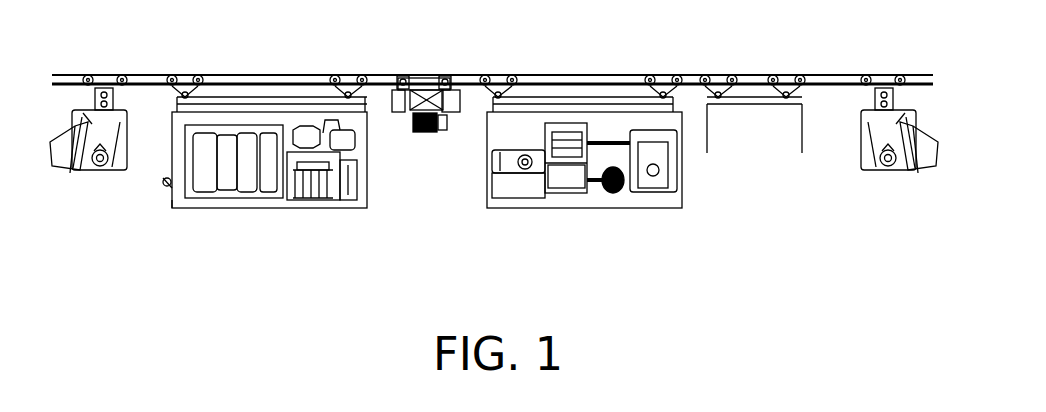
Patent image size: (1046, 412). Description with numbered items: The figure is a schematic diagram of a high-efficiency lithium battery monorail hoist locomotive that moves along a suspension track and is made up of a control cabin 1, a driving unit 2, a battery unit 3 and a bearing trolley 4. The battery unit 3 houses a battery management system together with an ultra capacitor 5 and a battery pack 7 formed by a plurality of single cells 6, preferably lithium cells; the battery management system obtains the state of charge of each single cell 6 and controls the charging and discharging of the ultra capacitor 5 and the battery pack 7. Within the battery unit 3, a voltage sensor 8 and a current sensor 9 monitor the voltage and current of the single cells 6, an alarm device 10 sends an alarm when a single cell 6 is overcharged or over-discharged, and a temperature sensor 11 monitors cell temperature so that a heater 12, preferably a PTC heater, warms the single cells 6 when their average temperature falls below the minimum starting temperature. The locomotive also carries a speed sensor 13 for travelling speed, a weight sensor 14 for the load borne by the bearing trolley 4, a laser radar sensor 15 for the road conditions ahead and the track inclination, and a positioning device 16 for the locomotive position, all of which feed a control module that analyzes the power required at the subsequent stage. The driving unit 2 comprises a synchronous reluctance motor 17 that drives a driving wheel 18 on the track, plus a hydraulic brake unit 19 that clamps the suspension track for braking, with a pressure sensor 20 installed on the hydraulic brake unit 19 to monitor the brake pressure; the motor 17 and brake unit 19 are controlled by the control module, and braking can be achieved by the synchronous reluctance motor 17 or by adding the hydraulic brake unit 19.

The control cabin 1 is at (100, 132).
The driving unit 2 is at (417, 77).
The battery unit 3 is at (240, 122).
The bearing trolley 4 is at (757, 97).
The ultra capacitor 5 is at (336, 200).
The single cell 6 is at (228, 180).
The battery pack 7 is at (157, 74).
The voltage sensor 8 is at (236, 190).
The current sensor 9 is at (250, 193).
The alarm device 10 is at (895, 172).
The temperature sensor 11 is at (252, 195).
The heater 12 is at (173, 207).
The speed sensor 13 is at (903, 110).
The weight sensor 14 is at (802, 125).
The laser radar sensor 15 is at (67, 170).
The positioning device 16 is at (862, 168).
The synchronous reluctance motor 17 is at (427, 133).
The driving wheel 18 is at (432, 77).
The hydraulic brake unit 19 is at (348, 77).
The pressure sensor 20 is at (393, 77).